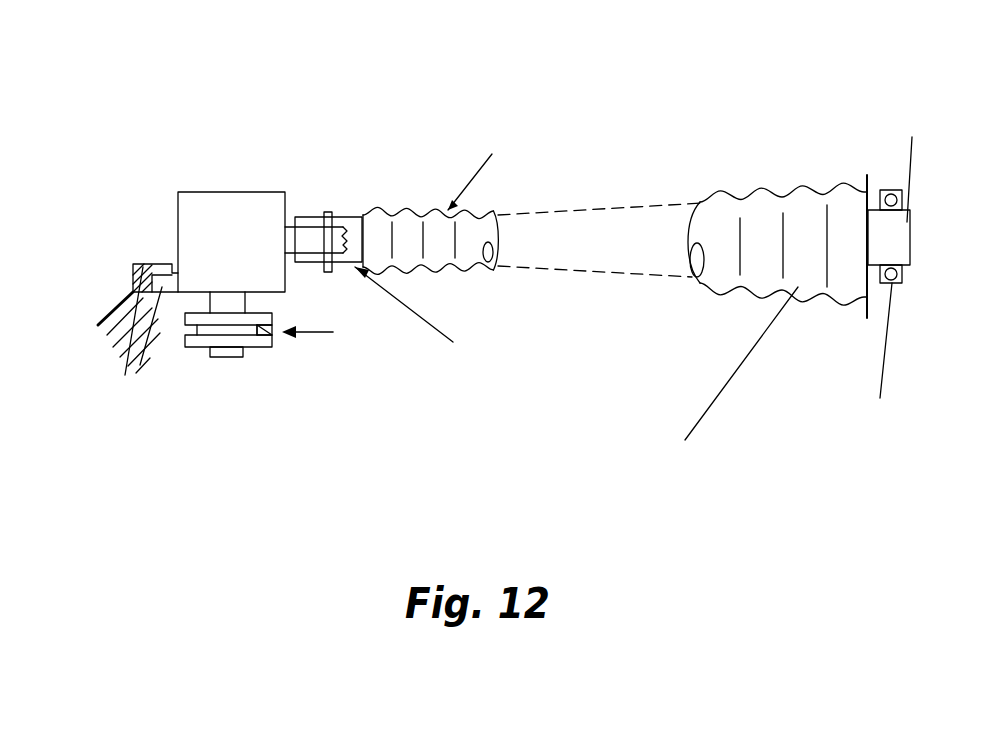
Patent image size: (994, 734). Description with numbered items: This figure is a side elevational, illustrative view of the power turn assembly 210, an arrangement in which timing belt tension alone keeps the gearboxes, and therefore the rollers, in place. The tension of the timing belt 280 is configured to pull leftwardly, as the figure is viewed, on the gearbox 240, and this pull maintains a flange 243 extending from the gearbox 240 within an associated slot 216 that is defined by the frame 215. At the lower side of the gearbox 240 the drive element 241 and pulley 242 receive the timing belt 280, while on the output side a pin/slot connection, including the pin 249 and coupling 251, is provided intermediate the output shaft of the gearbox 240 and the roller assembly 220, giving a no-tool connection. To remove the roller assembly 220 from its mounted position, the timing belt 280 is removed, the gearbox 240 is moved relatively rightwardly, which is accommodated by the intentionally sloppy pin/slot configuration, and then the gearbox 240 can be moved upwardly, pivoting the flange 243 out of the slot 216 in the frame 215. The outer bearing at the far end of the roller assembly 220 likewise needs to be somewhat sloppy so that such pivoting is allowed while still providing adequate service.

The power turn assembly 210 is at (752, 107).
The frame 215 is at (140, 343).
The slot 216 is at (125, 375).
The roller assembly 220 is at (635, 225).
The gearbox 240 is at (188, 217).
The gearbox output shaft 241 is at (240, 298).
The pulley 242 is at (197, 343).
The flange 243 is at (160, 275).
The pin 249 is at (329, 213).
The coupling sleeve 251 is at (299, 240).
The timing belt 280 is at (315, 333).